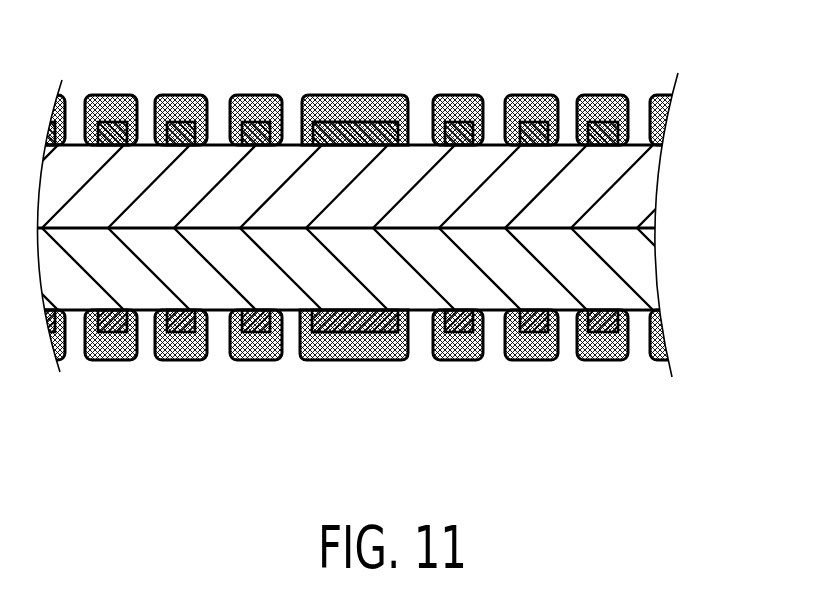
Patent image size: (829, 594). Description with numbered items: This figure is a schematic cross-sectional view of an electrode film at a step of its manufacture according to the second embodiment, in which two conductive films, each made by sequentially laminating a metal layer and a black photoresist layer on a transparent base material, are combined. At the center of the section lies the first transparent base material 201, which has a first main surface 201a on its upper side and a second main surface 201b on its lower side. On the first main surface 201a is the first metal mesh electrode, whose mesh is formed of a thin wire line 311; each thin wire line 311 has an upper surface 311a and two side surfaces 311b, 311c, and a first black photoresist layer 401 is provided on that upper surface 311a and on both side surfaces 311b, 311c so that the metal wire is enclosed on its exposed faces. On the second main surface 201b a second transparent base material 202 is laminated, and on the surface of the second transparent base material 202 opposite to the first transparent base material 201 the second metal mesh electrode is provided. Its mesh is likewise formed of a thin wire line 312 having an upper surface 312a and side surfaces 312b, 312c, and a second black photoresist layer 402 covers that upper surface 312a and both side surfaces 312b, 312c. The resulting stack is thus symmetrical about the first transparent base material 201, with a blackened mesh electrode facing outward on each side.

The first transparent base material 201 is at (643, 187).
The first main surface 201a is at (148, 145).
The second main surface 201b is at (153, 232).
The second transparent base material 202 is at (643, 272).
The thin wire line 311 is at (543, 120).
The upper surface 311a is at (384, 123).
The side surface 311b is at (305, 112).
The side surface 311c is at (412, 124).
The first black photoresist layer 401 is at (355, 122).
The thin wire line 312 is at (533, 333).
The upper surface 312a is at (387, 362).
The side surface 312b is at (298, 322).
The side surface 312c is at (407, 330).
The second black photoresist layer 402 is at (353, 360).